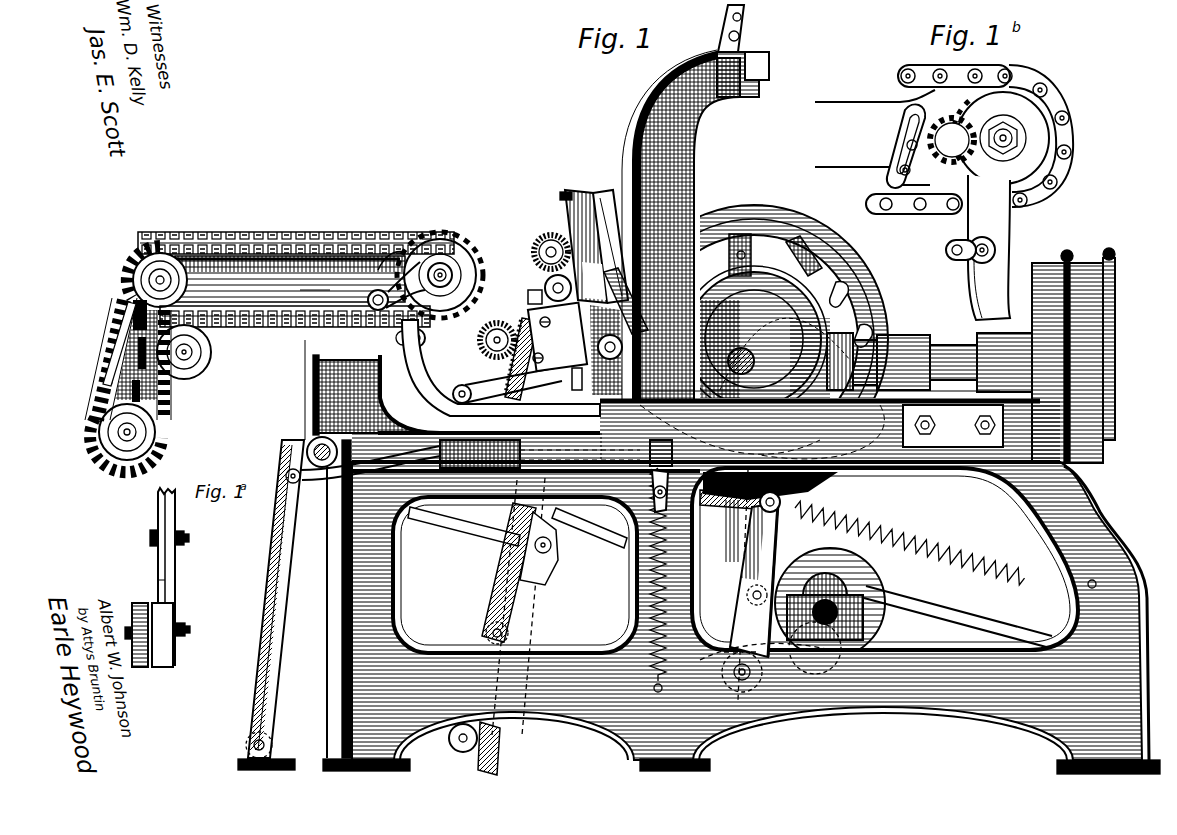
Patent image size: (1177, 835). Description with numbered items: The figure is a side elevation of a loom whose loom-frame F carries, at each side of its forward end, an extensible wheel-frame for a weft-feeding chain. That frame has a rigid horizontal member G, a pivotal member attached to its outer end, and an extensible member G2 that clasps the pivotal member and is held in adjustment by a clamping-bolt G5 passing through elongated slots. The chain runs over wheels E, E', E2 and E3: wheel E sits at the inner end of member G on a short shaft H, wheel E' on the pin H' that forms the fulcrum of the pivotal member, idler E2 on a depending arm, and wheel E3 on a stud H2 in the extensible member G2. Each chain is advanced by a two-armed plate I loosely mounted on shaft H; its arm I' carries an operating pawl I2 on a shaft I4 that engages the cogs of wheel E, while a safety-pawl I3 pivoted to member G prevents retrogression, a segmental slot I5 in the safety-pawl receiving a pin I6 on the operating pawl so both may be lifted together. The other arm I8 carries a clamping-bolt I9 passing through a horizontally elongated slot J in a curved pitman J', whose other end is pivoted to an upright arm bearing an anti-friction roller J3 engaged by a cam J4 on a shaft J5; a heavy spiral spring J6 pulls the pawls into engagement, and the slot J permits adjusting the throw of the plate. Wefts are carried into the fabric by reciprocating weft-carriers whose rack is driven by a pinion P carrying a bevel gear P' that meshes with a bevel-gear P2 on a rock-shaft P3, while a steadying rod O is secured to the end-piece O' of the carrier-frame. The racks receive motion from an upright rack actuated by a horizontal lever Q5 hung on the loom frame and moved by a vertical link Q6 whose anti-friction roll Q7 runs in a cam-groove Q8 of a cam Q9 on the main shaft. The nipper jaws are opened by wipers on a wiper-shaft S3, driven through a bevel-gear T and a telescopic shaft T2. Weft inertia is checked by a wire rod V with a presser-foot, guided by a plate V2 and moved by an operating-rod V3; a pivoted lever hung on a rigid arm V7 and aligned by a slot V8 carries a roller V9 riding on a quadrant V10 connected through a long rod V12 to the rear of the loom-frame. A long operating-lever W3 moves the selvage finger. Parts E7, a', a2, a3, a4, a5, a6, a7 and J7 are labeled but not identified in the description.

In FIG. 1, the wheel E is at (329, 267).
In FIG. 1, the wheel E' is at (157, 254).
In FIG. 1, the idler wheel E2 is at (200, 356).
In FIG. 1, the wheel E3 is at (158, 435).
In FIG. 1A, the gear wheel E7 is at (130, 622).
In FIG. 1, the short shaft H is at (469, 263).
In FIG. 1B, the short shaft H is at (1003, 129).
In FIG. 1, the pin H' is at (296, 230).
In FIG. 1, the stud H2 is at (92, 448).
In FIG. 1A, the stud H2 is at (192, 630).
In FIG. 1, the conveyor link a' is at (103, 317).
In FIG. 1A, the conveyor link a' is at (137, 574).
In FIG. 1, the conveyor link a2 is at (125, 385).
In FIG. 1, the conveyor link a3 is at (130, 360).
In FIG. 1, the conveyor link a4 is at (120, 338).
In FIG. 1A, the conveyor link a4 is at (152, 538).
In FIG. 1, the conveyor link a5 is at (90, 405).
In FIG. 1, the conveyor link a6 is at (128, 312).
In FIG. 1, the conveyor roller a7 is at (195, 342).
In FIG. 1, the rigid horizontal member G is at (315, 292).
In FIG. 1B, the rigid horizontal member G is at (828, 140).
In FIG. 1A, the extensible member G2 is at (177, 577).
In FIG. 1A, the clamping-bolt G5 is at (190, 538).
In FIG. 1, the two-armed plate I is at (416, 263).
In FIG. 1B, the two-armed plate I is at (1001, 138).
In FIG. 1, the arm I' is at (399, 288).
In FIG. 1, the operating pawl I2 is at (378, 252).
In FIG. 1, the safety pawl I3 is at (400, 250).
In FIG. 1B, the safety pawl I3 is at (900, 130).
In FIG. 1, the shaft I4 is at (517, 282).
In FIG. 1, the segmental slot I5 is at (428, 240).
In FIG. 1B, the segmental slot I5 is at (945, 118).
In FIG. 1, the pin I6 is at (368, 300).
In FIG. 1B, the pin I6 is at (900, 156).
In FIG. 1B, the arm I8 is at (978, 240).
In FIG. 1, the clamping-bolt I9 is at (417, 336).
In FIG. 1B, the clamping-bolt I9 is at (998, 249).
In FIG. 1, the horizontally elongated slot J is at (492, 368).
In FIG. 1B, the horizontally elongated slot J is at (945, 249).
In FIG. 1, the curved pitman J' is at (414, 386).
In FIG. 1B, the curved pitman J' is at (978, 247).
In FIG. 1, the anti-friction roller J3 is at (790, 540).
In FIG. 1, the cam J4 is at (830, 598).
In FIG. 1, the shaft J5 is at (838, 568).
In FIG. 1, the spiral spring J6 is at (945, 545).
In FIG. 1, the rod J7 is at (966, 589).
In FIG. 1, the pinion P is at (511, 359).
In FIG. 1, the beveled gear P' is at (511, 314).
In FIG. 1, the bevel-gear P2 is at (496, 330).
In FIG. 1, the rock-shaft P3 is at (488, 352).
In FIG. 1, the rod O is at (551, 282).
In FIG. 1, the end-piece O' is at (541, 251).
In FIG. 1, the wiper-shaft S3 is at (540, 240).
In FIG. 1, the bevel-gear T is at (557, 289).
In FIG. 1, the shaft T2 is at (690, 190).
In FIG. 1, the rod V is at (580, 196).
In FIG. 1, the small plate V2 is at (562, 200).
In FIG. 1, the operating-rod V3 is at (619, 312).
In FIG. 1, the rigid arm V7 is at (507, 385).
In FIG. 1, the slot V8 is at (565, 389).
In FIG. 1, the anti-friction roller V9 is at (562, 404).
In FIG. 1, the quadrant V10 is at (580, 512).
In FIG. 1, the long rod V12 is at (594, 538).
In FIG. 1, the operating-lever W3 is at (615, 230).
In FIG. 1, the horizontal lever Q5 is at (620, 566).
In FIG. 1, the vertical link Q6 is at (740, 574).
In FIG. 1, the anti-friction roll Q7 is at (726, 285).
In FIG. 1, the cam-groove Q8 is at (785, 282).
In FIG. 1, the cam Q9 is at (824, 266).
In FIG. 1, the loom-frame F is at (307, 605).